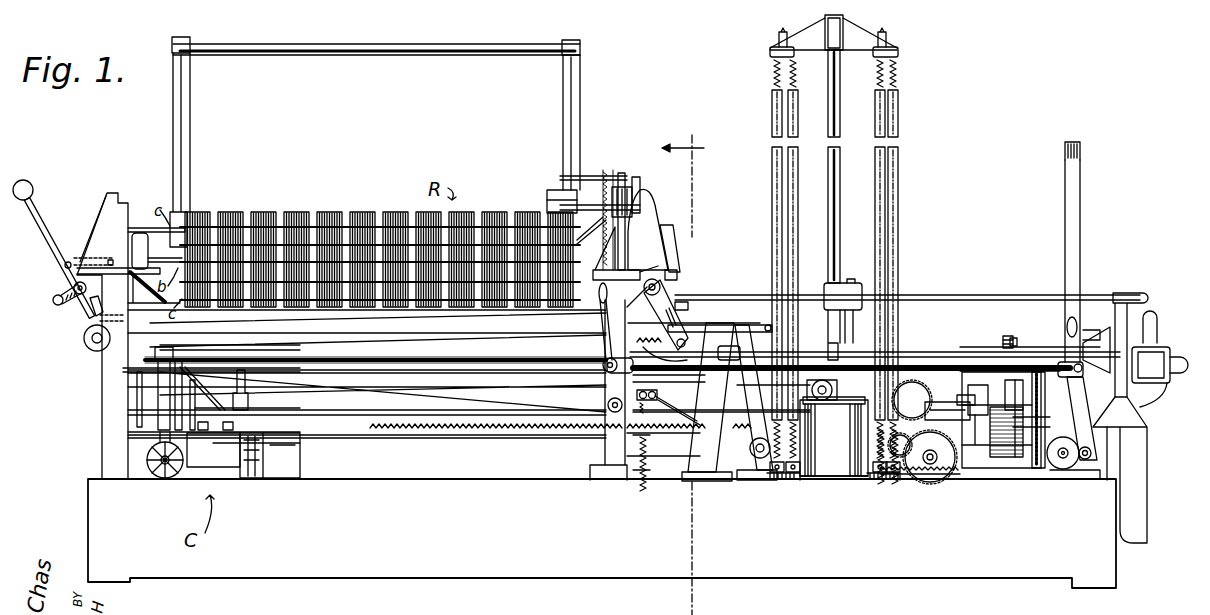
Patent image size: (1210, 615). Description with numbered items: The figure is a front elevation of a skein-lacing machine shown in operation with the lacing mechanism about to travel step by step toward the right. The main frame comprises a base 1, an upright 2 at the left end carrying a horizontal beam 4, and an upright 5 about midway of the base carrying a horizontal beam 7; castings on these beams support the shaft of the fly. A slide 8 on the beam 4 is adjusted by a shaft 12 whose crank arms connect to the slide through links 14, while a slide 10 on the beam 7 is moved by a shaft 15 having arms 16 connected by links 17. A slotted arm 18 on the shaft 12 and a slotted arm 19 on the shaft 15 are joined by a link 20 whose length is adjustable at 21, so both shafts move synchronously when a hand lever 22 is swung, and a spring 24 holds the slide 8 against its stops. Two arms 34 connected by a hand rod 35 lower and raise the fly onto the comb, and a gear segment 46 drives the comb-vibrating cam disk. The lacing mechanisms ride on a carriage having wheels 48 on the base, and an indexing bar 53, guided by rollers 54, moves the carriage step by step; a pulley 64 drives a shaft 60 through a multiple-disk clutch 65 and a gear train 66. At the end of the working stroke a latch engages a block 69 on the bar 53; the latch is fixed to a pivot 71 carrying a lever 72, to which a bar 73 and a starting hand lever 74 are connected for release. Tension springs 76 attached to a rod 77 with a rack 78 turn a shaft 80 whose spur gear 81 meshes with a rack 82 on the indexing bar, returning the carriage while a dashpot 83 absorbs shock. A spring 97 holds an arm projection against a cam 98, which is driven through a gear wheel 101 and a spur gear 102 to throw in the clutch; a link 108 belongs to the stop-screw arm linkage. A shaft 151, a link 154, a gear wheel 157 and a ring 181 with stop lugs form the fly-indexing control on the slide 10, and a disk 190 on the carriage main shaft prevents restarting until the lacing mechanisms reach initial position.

The base 1 is at (390, 568).
The upright 2 is at (108, 395).
The horizontal beam 4 is at (116, 297).
The upright 5 is at (610, 470).
The horizontal beam 7 is at (630, 310).
The slide 8 is at (108, 215).
The slide 10 is at (613, 320).
The shaft 12 is at (64, 266).
The link 14 is at (94, 256).
The shaft 15 is at (662, 291).
The arm 16 is at (660, 268).
The link 17 is at (647, 238).
The arm 18 is at (92, 305).
The arm 19 is at (682, 325).
The link 20 is at (252, 327).
The length adjustment 21 is at (690, 351).
The hand lever 22 is at (36, 211).
The spring 24 is at (60, 288).
The arm 34 is at (186, 146).
The hand rod 35 is at (368, 50).
The gear segment 46 is at (661, 226).
The wheel 48 is at (165, 480).
The indexing bar 53 is at (350, 425).
The roller 54 is at (1065, 472).
The shaft 60 is at (896, 451).
The pulley 64 is at (1065, 333).
The multiple-disk clutch 65 is at (1005, 470).
The gear train 66 is at (1023, 343).
The block 69 is at (293, 440).
The pivot 71 is at (760, 462).
The lever 72 is at (752, 396).
The bar 73 is at (722, 329).
The starting hand lever 74 is at (560, 340).
The tension spring 76 is at (772, 183).
The rod 77 is at (828, 179).
The rack 78 is at (830, 341).
The shaft 80 is at (834, 436).
The spur gear 81 is at (800, 380).
The rack 82 is at (495, 430).
The dashpot 83 is at (832, 466).
The tension spring 97 is at (905, 478).
The cam 98 is at (945, 480).
The spur gear wheel 101 is at (950, 415).
The spur gear 102 is at (912, 399).
The link 108 is at (873, 404).
The shaft 151 is at (682, 442).
The link 154 is at (590, 372).
The gear wheel 157 is at (606, 190).
The ring 181 is at (616, 176).
The disk 190 is at (250, 478).